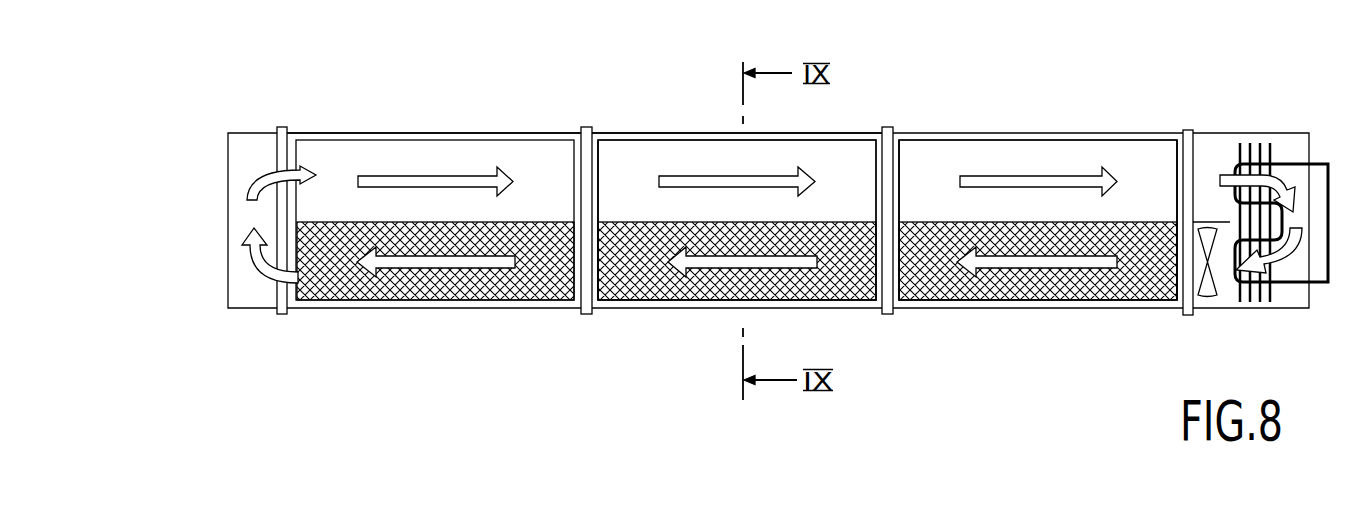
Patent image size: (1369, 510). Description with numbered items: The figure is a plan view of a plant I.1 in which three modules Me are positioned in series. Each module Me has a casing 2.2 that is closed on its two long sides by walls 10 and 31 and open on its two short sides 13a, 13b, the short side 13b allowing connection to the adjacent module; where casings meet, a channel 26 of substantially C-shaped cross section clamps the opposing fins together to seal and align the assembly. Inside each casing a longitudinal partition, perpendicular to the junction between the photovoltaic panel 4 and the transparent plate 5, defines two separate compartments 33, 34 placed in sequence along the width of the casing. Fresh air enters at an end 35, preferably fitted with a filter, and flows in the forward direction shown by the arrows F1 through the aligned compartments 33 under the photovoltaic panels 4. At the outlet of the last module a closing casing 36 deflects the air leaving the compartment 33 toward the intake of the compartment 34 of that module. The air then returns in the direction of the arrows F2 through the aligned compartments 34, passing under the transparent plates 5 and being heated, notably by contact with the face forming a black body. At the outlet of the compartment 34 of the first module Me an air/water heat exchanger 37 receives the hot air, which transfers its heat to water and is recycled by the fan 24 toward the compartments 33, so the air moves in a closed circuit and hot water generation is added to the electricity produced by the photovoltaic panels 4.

The wall 10 is at (612, 134).
The plant I.1 is at (570, 100).
The casing 2.2 is at (685, 126).
The transparent plate 5 is at (630, 162).
The photovoltaic panel 4 is at (638, 278).
The module Me is at (855, 124).
The short side 13a is at (595, 188).
The short side 13b is at (897, 178).
The wall 31 is at (607, 315).
The channel 26 is at (885, 270).
The compartment 33 is at (945, 280).
The compartment 34 is at (990, 160).
The end 35 is at (1165, 272).
The closing casing 36 is at (227, 177).
The air/water heat exchanger 37 is at (1287, 134).
The fan 24 is at (1213, 296).
The arrow F1 is at (1048, 260).
The arrow F2 is at (391, 180).